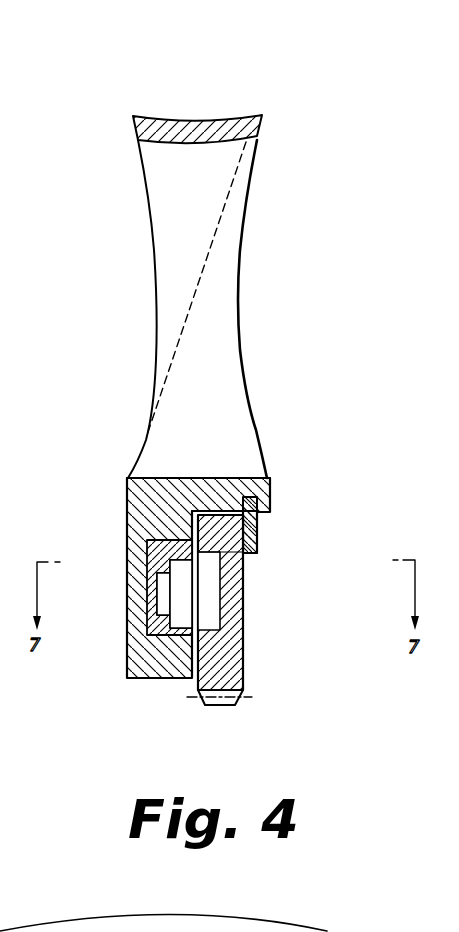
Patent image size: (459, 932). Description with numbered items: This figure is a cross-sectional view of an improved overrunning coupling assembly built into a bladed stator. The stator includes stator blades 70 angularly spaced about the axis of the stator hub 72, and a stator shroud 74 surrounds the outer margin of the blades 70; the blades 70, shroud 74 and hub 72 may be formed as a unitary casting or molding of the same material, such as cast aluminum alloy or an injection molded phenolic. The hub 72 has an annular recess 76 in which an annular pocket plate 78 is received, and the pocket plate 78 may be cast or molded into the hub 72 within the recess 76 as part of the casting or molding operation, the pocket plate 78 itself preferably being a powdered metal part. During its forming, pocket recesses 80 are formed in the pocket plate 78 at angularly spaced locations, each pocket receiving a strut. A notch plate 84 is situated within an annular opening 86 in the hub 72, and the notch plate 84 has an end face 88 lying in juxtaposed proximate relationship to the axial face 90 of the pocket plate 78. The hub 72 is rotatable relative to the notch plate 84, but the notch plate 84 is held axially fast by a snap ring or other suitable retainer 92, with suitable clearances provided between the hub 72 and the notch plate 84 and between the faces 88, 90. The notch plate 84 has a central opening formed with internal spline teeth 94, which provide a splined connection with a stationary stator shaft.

The stator blades 70 is at (235, 353).
The stator shroud 74 is at (203, 122).
The stator hub 72 is at (272, 477).
The annular opening 86 is at (223, 513).
The snap ring 92 is at (252, 547).
The annular recess 76 is at (150, 567).
The pocket recesses 80 is at (170, 593).
The axial face 90 is at (190, 632).
The annular pocket plate 78 is at (222, 632).
The notch plate 84 is at (200, 645).
The end face 88 is at (197, 683).
The internal spline teeth 94 is at (238, 705).